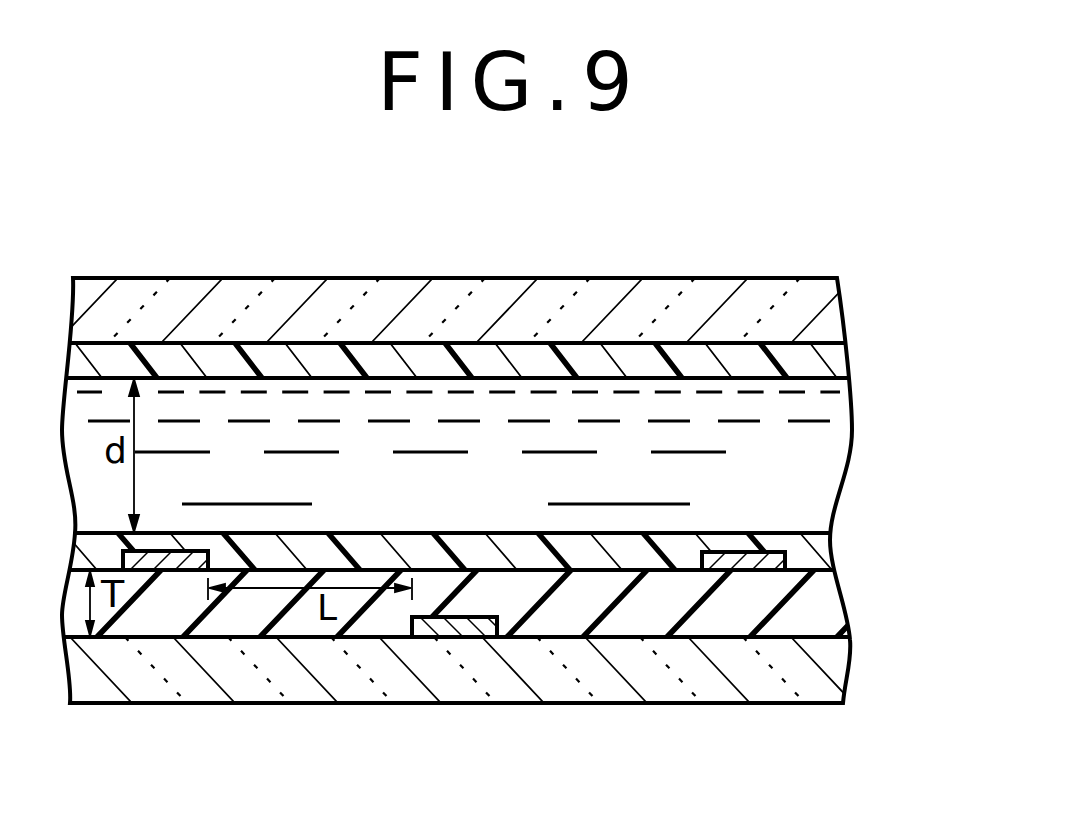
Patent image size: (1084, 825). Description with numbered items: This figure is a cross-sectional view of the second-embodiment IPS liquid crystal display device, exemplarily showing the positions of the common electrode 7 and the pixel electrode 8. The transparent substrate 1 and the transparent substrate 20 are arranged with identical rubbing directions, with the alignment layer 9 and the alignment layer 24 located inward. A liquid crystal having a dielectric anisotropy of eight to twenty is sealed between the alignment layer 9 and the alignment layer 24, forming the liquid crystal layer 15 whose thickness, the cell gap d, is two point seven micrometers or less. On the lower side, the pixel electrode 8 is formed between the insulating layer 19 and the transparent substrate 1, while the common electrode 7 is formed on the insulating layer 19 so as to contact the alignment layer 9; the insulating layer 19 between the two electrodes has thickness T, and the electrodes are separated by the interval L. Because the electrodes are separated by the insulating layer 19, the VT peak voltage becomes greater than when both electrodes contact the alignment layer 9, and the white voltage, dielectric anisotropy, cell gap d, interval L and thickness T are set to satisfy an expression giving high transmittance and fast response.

The transparent substrate 20 is at (797, 318).
The alignment layer 24 is at (803, 367).
The liquid crystal layer 15 is at (753, 463).
The alignment layer 9 is at (803, 555).
The insulating layer 19 is at (808, 607).
The transparent substrate 1 is at (803, 672).
The common electrode 7 is at (176, 558).
The pixel electrode 8 is at (462, 624).